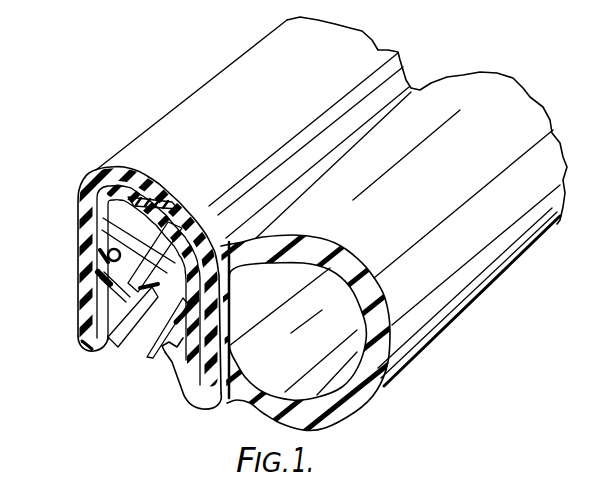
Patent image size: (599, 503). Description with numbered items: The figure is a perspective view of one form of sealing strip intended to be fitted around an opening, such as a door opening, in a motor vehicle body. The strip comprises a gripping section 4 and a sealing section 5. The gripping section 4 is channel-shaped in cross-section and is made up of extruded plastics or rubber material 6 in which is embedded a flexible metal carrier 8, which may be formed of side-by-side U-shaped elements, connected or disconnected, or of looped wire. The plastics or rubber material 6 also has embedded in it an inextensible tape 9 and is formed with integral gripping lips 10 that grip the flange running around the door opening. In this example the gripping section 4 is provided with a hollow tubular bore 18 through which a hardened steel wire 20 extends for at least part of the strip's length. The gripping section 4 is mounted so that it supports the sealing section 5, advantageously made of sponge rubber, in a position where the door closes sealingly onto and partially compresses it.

The gripping section 4 is at (228, 78).
The sealing section 5 is at (352, 408).
The extruded plastics or rubber material 6 is at (88, 352).
The flexible metal carrier 8 is at (88, 206).
The inextensible tape 9 is at (157, 183).
The gripping lips 10 is at (120, 316).
The hollow tubular bore 18 is at (110, 279).
The hardened steel wire 20 is at (108, 254).